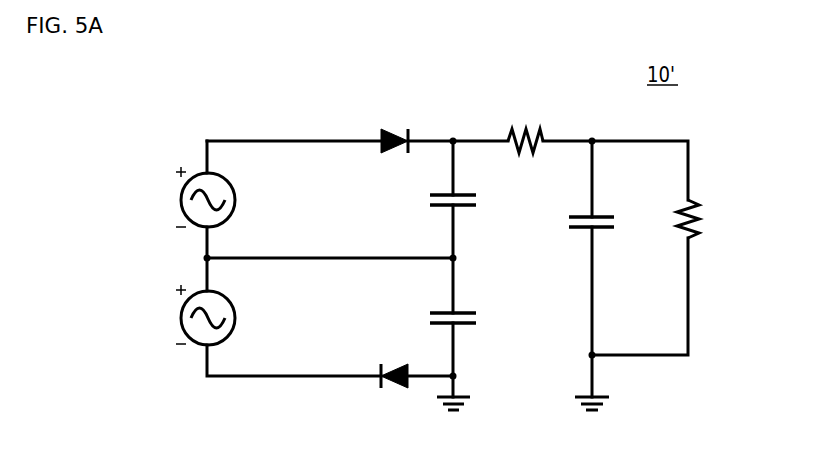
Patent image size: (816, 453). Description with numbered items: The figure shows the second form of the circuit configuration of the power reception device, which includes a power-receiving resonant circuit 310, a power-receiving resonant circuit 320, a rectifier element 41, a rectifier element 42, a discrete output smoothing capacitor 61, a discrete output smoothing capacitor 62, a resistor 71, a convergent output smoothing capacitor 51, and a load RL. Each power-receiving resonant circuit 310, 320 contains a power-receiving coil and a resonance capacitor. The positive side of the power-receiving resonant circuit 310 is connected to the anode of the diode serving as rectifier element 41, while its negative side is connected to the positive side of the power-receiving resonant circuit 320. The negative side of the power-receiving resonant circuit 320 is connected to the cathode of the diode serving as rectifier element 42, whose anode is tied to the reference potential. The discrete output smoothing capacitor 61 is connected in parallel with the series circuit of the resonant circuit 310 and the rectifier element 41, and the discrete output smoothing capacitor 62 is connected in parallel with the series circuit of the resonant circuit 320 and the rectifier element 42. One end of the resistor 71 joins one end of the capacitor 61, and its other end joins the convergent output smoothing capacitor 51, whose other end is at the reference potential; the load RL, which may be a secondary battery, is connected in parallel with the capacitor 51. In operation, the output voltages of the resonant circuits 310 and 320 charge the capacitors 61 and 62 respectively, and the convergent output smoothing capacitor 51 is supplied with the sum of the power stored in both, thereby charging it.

The power-receiving resonant circuit 310 is at (238, 189).
The power-receiving resonant circuit 320 is at (238, 303).
The rectifier element 41 is at (400, 122).
The rectifier element 42 is at (392, 361).
The discrete output smoothing capacitor 61 is at (433, 188).
The discrete output smoothing capacitor 62 is at (432, 303).
The resistor 71 is at (521, 125).
The convergent output smoothing capacitor 51 is at (576, 208).
The load RL is at (703, 203).